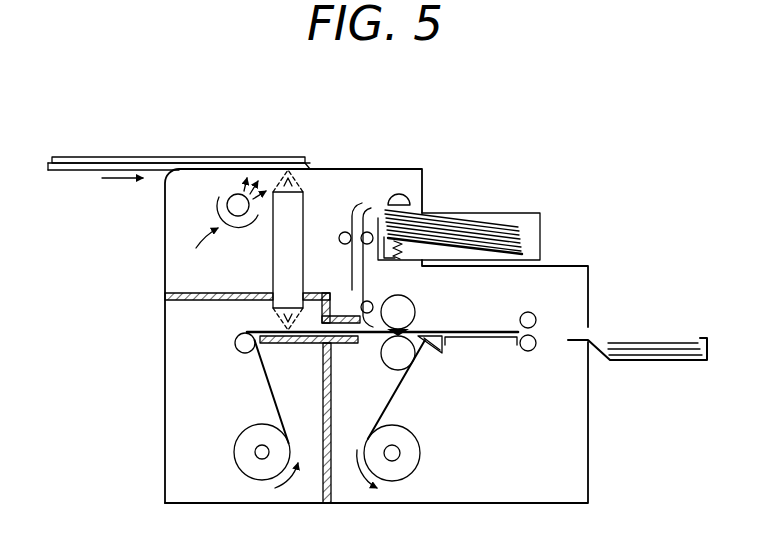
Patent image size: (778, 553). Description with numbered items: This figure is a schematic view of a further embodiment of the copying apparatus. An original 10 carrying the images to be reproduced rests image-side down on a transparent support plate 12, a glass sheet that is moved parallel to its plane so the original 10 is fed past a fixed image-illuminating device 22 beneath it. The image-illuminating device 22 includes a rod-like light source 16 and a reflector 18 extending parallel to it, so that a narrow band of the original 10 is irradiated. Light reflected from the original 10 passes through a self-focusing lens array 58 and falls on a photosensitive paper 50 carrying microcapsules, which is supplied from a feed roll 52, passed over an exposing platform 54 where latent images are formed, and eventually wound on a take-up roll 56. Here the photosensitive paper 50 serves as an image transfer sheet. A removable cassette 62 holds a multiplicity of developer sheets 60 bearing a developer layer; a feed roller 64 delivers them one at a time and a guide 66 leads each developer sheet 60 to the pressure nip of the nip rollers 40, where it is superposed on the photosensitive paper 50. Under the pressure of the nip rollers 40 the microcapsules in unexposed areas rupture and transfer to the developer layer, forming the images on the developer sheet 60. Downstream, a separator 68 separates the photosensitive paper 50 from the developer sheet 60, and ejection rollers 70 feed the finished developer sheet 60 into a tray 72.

The original 10 is at (193, 158).
The transparent support plate 12 is at (56, 171).
The light source 16 is at (228, 196).
The reflector 18 is at (220, 208).
The image-illuminating device 22 is at (198, 251).
The nip rollers 40 is at (414, 306).
The photosensitive paper 50 is at (250, 378).
The feed roll 52 is at (243, 465).
The exposing platform 54 is at (278, 346).
The take-up roll 56 is at (412, 465).
The self-focusing lens array 58 is at (273, 265).
The developer sheets 60 is at (505, 226).
The removable cassette 62 is at (542, 230).
The feed roller 64 is at (400, 193).
The guide 66 is at (357, 211).
The separator 68 is at (430, 350).
The ejection rollers 70 is at (533, 313).
The tray 72 is at (603, 362).